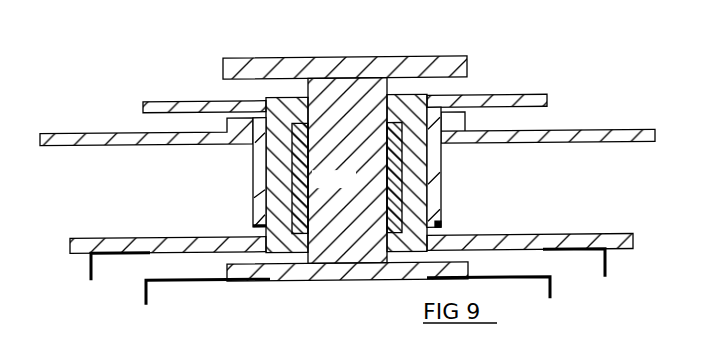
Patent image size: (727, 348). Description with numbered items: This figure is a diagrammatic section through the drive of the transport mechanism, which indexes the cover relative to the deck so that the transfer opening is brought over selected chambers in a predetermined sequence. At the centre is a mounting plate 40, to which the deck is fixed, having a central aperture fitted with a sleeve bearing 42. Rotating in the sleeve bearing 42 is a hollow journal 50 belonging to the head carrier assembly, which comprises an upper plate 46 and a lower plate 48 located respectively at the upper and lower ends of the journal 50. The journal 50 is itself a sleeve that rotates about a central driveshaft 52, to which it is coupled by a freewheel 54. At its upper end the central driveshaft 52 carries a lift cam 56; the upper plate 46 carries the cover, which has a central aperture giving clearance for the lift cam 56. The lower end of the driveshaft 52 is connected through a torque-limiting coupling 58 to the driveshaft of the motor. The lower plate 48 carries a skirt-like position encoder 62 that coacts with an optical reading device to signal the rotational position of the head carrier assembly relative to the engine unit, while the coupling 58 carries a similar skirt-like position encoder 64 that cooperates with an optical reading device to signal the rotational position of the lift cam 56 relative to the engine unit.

The mounting plate 40 is at (90, 131).
The sleeve bearing 42 is at (443, 166).
The upper plate 46 is at (548, 98).
The lower plate 48 is at (83, 236).
The hollow journal 50 is at (404, 198).
The central driveshaft 52 is at (347, 171).
The freewheel 54 is at (296, 177).
The lift cam 56 is at (272, 57).
The torque-limiting coupling 58 is at (306, 270).
The position encoder 62 is at (95, 267).
The position encoder 64 is at (150, 289).